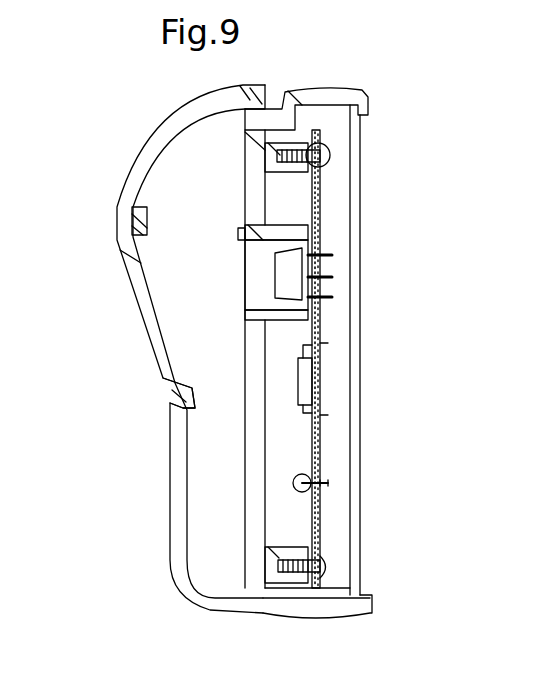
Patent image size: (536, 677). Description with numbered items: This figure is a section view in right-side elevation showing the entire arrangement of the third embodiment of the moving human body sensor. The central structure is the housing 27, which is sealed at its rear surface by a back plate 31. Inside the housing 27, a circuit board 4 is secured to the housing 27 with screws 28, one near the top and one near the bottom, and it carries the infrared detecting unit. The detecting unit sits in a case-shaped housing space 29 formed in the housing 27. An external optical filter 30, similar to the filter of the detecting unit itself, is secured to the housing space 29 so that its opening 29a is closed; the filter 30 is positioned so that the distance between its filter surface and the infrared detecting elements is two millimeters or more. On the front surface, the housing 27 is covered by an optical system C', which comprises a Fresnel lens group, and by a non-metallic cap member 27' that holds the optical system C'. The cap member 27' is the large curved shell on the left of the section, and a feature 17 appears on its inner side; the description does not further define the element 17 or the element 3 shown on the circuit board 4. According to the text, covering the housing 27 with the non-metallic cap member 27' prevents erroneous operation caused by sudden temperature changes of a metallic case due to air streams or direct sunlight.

The housing 27 is at (308, 80).
The non-metallic cap member 27' is at (157, 349).
The boss 17 is at (187, 246).
The optical system C' is at (159, 387).
The back plate 31 is at (358, 300).
The circuit board 4 is at (320, 197).
The screws 28 is at (330, 154).
The housing space 29 is at (243, 316).
The opening 29a is at (242, 250).
The external optical filter 30 is at (258, 291).
The light emitting element 3 is at (312, 373).